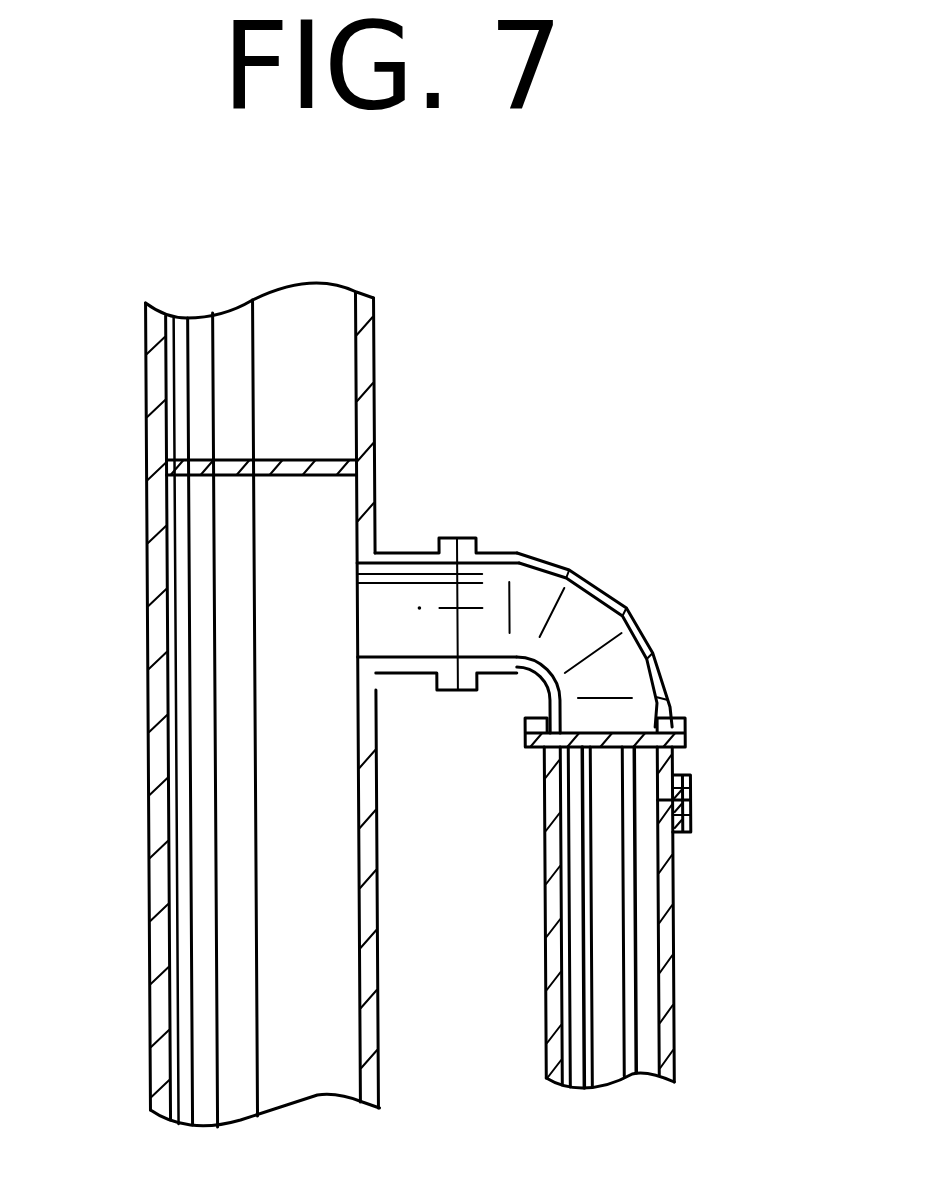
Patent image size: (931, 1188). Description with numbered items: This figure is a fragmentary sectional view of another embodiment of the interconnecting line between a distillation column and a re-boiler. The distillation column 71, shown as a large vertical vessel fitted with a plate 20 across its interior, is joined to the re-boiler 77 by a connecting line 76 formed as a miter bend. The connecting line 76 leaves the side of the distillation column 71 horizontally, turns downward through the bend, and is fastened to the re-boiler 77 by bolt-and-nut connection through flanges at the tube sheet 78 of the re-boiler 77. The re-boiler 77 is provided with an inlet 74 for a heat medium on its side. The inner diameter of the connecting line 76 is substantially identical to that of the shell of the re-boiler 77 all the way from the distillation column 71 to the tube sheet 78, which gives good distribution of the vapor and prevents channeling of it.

The distillation column 71 is at (148, 633).
The plate 20 is at (328, 458).
The connecting line 76 is at (623, 605).
The tube sheet 78 is at (685, 740).
The inlet of a heat medium 74 is at (690, 800).
The re-boiler 77 is at (668, 958).